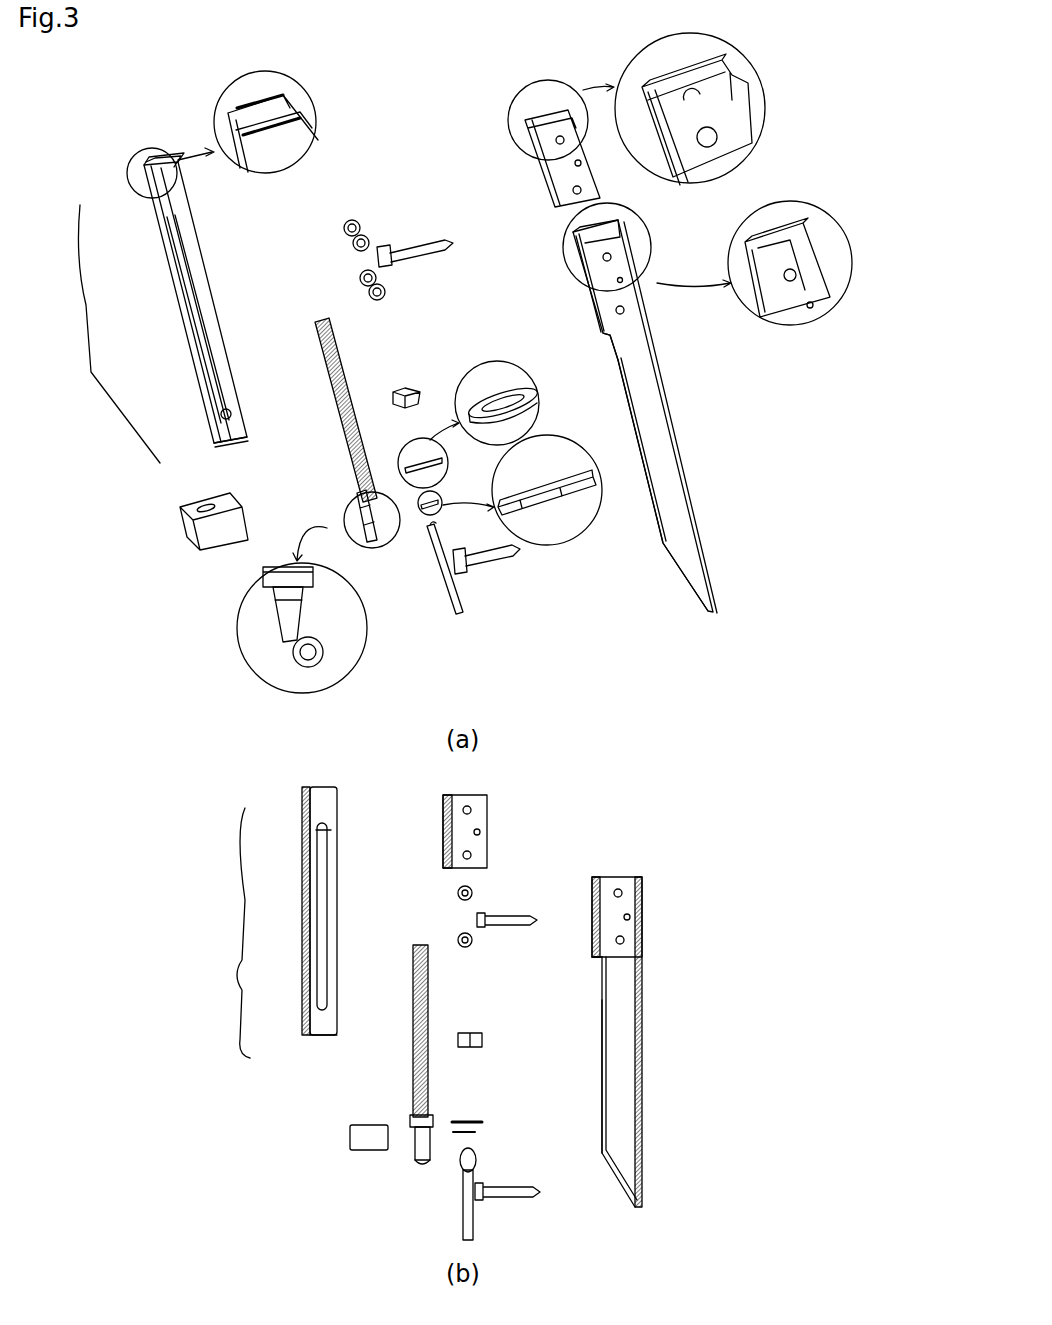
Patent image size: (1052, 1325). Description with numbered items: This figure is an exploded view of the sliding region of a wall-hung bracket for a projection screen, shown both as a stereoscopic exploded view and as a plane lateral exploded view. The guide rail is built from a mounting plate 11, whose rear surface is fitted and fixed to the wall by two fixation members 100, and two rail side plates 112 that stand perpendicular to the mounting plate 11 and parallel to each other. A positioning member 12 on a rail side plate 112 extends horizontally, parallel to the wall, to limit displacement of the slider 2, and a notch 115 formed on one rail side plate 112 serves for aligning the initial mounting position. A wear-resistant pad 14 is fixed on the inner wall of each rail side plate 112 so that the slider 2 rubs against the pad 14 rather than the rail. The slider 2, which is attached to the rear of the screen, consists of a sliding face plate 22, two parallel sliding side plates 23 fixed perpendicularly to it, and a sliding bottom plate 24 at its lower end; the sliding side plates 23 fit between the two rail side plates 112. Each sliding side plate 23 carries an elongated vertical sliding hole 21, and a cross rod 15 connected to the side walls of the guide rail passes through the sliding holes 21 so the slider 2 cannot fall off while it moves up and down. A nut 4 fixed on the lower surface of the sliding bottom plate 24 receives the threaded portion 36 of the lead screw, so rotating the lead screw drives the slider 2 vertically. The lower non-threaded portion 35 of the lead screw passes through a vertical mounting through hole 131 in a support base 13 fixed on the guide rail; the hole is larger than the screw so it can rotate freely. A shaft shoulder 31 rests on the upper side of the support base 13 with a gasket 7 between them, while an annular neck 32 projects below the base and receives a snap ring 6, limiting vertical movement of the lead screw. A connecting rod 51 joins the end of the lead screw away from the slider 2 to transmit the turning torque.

The slider 2 is at (156, 631).
The sliding hole 21 is at (170, 250).
The sliding face plate 22 is at (186, 345).
The sliding side plates 23 is at (163, 181).
The sliding bottom plate 24 is at (218, 448).
The support base 13 is at (203, 540).
The mounting through hole 131 is at (207, 500).
The cross rod 15 is at (358, 283).
The fixation member 100 is at (443, 248).
The threaded portion 36 is at (318, 362).
The nut 4 is at (403, 388).
The gasket 7 is at (540, 413).
The snap ring 6 is at (560, 500).
The connecting rod 51 is at (460, 603).
The shaft shoulder 31 is at (310, 572).
The non-threaded portion 35 is at (290, 597).
The annular neck 32 is at (320, 627).
The pad 14 is at (540, 122).
The mounting plate 11 is at (645, 233).
The rail side plates 112 is at (598, 232).
The positioning member 12 is at (600, 285).
The notch 115 is at (668, 395).